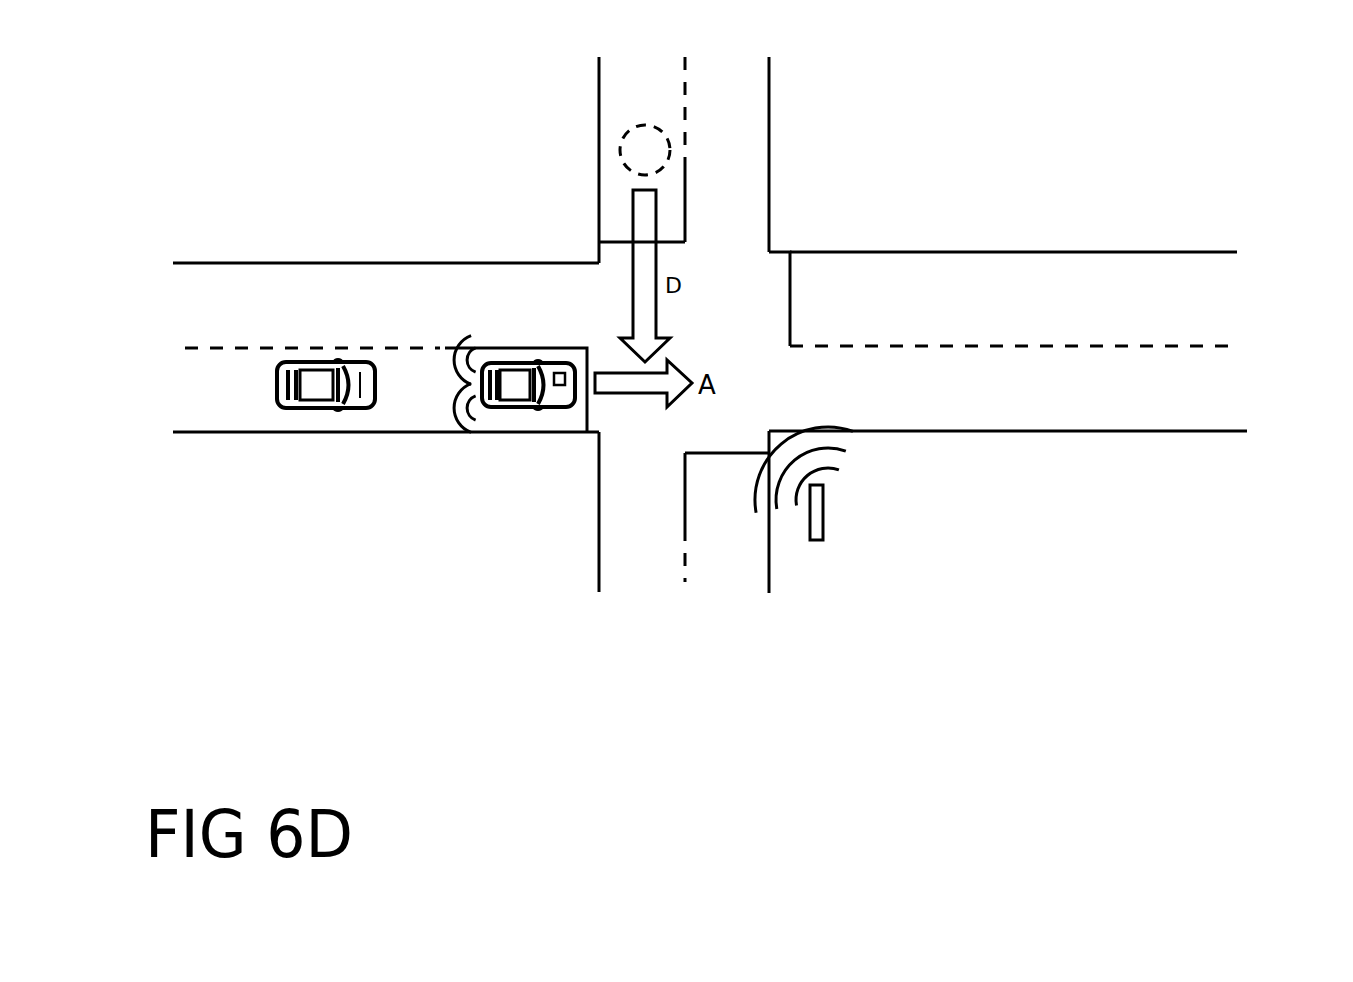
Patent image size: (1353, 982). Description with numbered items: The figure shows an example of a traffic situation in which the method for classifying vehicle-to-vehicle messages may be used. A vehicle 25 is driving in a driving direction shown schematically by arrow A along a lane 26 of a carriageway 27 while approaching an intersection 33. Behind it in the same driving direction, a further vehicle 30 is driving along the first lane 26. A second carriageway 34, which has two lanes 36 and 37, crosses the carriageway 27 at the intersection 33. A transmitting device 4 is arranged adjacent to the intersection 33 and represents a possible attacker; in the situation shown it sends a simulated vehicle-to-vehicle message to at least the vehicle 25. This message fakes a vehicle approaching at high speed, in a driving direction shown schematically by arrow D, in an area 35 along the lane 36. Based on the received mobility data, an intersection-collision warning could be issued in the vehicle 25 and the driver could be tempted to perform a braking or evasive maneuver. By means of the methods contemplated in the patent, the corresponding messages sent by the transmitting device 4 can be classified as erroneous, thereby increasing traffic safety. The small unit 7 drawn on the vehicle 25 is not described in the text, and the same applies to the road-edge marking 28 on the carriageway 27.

The transmitting device 4 is at (823, 512).
The communication unit of vehicle 7 is at (564, 395).
The vehicle 25 is at (510, 388).
The lane 26 is at (1135, 407).
The carriageway 27 is at (1248, 384).
The road edge 28 is at (1160, 280).
The further vehicle 30 is at (305, 388).
The intersection 33 is at (805, 206).
The carriageway 34 is at (726, 592).
The area 35 is at (640, 148).
The lane 36 is at (620, 522).
The lane 37 is at (755, 115).